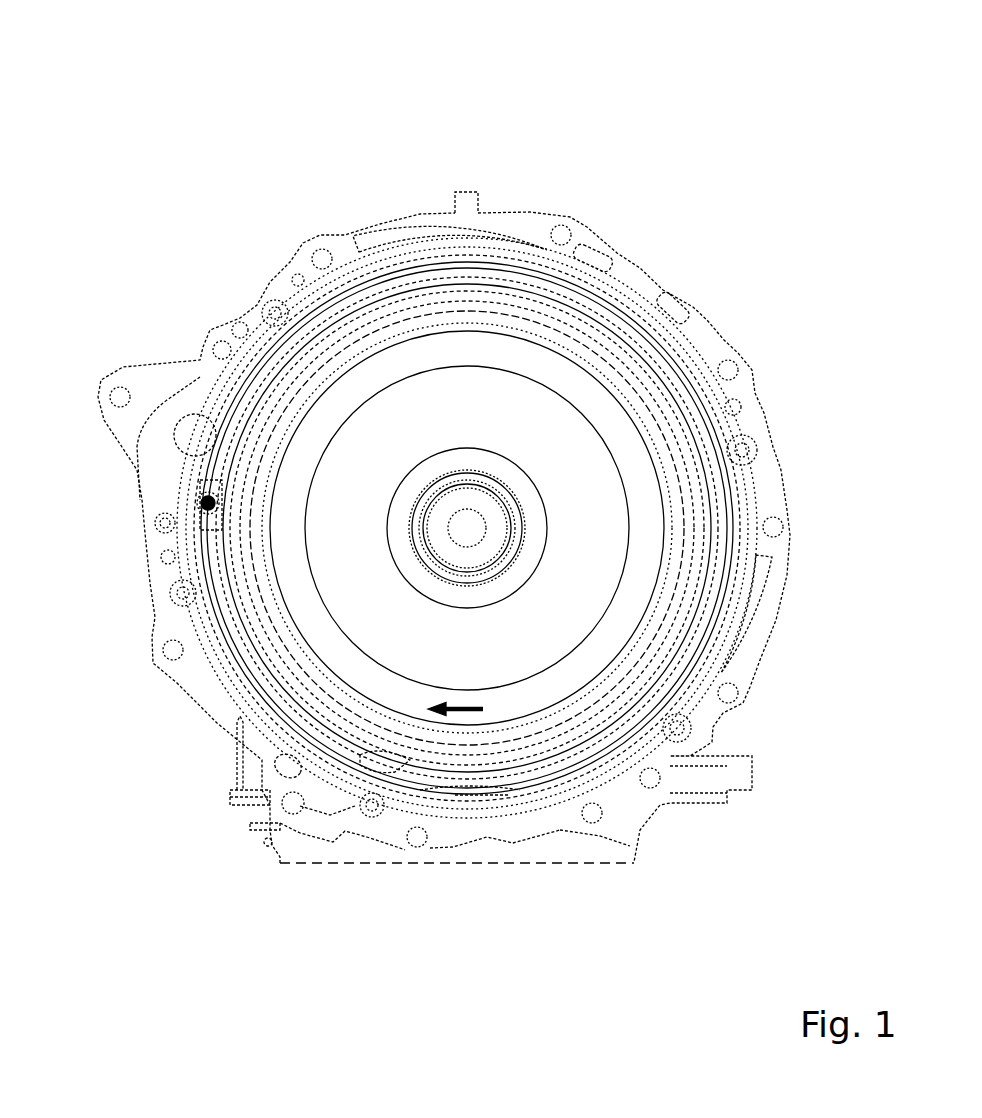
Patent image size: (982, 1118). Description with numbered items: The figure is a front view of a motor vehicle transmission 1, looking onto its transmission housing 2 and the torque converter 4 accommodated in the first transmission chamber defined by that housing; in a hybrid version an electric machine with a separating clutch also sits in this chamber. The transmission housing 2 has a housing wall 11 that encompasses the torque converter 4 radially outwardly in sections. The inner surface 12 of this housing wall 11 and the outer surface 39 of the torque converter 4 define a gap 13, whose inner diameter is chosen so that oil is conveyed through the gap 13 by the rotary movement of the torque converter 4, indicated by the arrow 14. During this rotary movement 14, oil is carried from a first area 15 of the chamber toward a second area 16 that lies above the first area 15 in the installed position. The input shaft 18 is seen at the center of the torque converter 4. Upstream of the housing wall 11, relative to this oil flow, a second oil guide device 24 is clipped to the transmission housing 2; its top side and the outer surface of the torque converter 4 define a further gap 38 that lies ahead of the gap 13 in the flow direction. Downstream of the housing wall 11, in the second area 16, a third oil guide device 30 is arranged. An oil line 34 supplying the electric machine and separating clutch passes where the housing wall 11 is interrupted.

The motor vehicle transmission 1 is at (456, 537).
The transmission housing 2 is at (444, 471).
The torque converter 4 is at (430, 355).
The housing wall 11 is at (218, 593).
The inner surface 12 is at (566, 625).
The gap 13 is at (375, 528).
The arrow 14 is at (460, 703).
The first area 15 is at (483, 788).
The second area 16 is at (467, 440).
The input shaft 18 is at (467, 528).
The second oil guide device 24 is at (221, 747).
The third oil guide device 30 is at (467, 422).
The oil line 34 is at (202, 501).
The gap 38 is at (650, 818).
The outer surface 39 is at (395, 528).